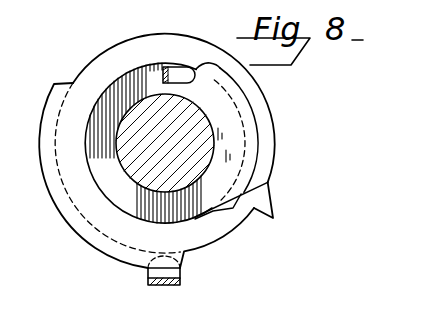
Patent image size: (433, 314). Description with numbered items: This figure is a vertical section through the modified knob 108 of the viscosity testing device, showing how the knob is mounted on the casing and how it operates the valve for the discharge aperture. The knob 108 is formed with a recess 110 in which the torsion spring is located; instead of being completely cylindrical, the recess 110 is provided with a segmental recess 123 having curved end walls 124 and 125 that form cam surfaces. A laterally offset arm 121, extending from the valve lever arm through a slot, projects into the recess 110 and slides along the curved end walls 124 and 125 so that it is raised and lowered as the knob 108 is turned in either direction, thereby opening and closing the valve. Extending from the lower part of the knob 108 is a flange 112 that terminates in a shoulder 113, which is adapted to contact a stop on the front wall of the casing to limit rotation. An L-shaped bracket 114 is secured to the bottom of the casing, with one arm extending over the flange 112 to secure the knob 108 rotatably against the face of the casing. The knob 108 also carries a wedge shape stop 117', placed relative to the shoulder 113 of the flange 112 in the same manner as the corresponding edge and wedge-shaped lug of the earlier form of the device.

The knob 108 is at (122, 44).
The recess 110 is at (107, 125).
The flange 112 is at (44, 181).
The shoulder 113 is at (183, 260).
The L-shaped bracket 114 is at (148, 276).
The wedge shape stop 117' is at (292, 200).
The laterally offset arm 121 is at (177, 66).
The segmental recess 123 is at (243, 125).
The curved end wall 124 is at (212, 63).
The curved end wall 125 is at (270, 182).